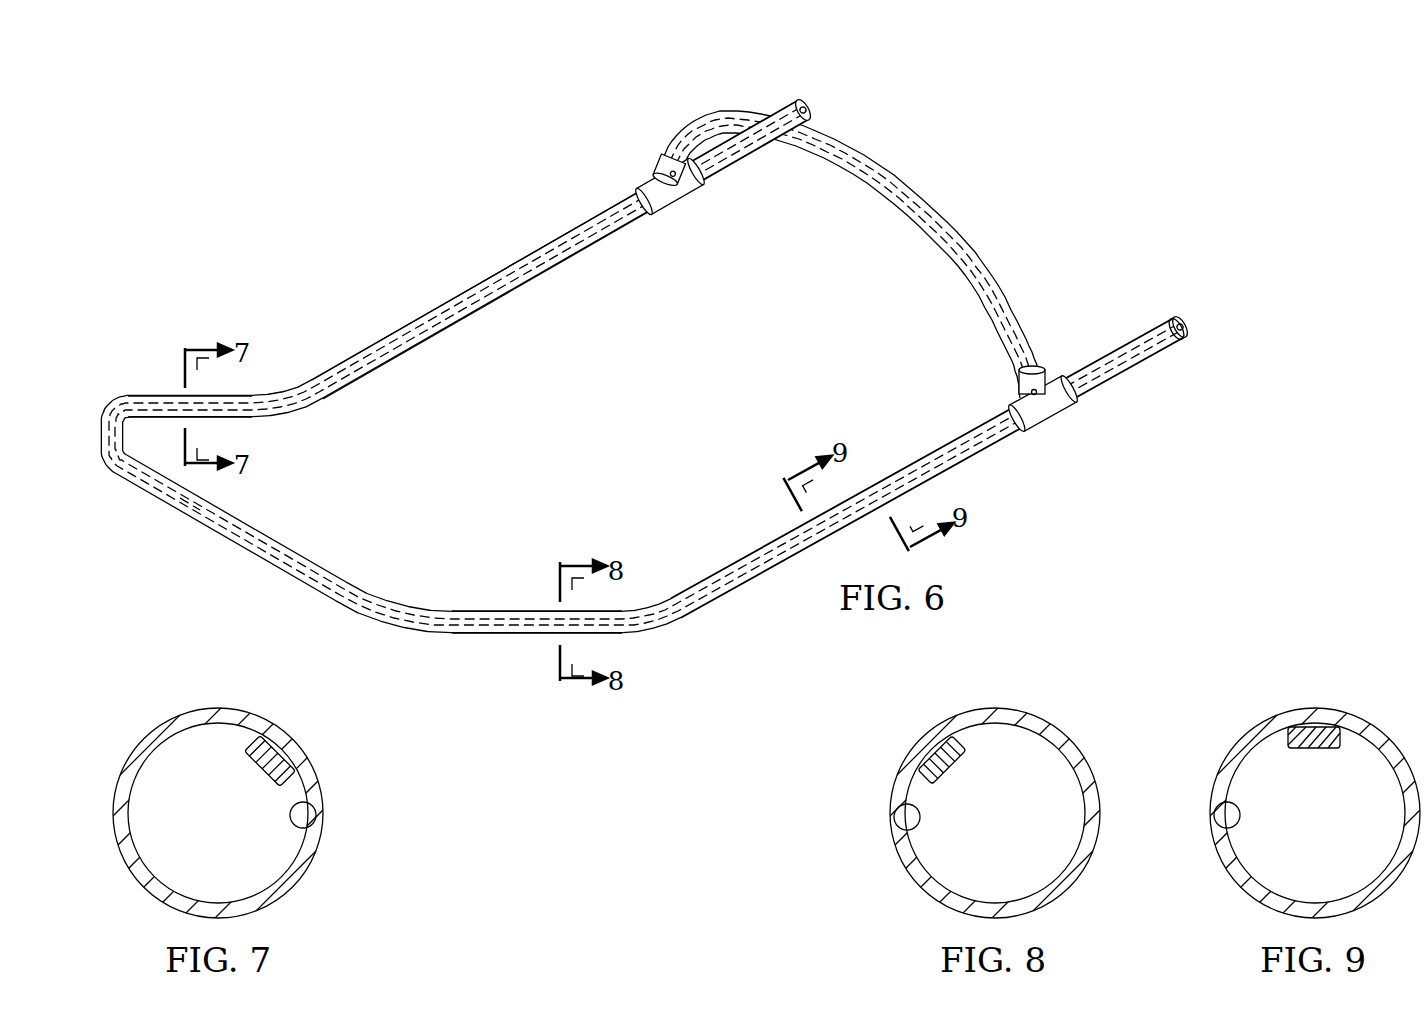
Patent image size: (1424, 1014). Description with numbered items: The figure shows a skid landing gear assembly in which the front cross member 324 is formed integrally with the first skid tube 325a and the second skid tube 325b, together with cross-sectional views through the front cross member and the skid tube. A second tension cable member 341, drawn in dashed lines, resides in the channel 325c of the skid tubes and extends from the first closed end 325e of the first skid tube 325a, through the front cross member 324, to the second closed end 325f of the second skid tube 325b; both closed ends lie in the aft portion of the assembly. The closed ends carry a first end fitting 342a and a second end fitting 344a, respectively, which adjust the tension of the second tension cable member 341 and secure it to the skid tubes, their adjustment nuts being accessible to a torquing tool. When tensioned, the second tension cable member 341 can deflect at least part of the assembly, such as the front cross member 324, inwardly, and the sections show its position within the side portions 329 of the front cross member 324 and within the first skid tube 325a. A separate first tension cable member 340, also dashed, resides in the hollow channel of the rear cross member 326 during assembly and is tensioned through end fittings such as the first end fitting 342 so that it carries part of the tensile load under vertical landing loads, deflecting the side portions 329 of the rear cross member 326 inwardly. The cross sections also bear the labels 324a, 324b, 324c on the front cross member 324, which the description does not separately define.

In FIG. 6, the front cross member 324 is at (246, 548).
In FIG. 7, the outer tube wall 324a is at (228, 920).
In FIG. 8, the outer tube wall 324a is at (1000, 918).
In FIG. 7, the outer tube layer 324b is at (219, 706).
In FIG. 8, the outer tube layer 324b is at (991, 707).
In FIG. 7, the outer tube channel 324c is at (322, 816).
In FIG. 8, the outer tube channel 324c is at (894, 816).
In FIG. 6, the first skid tube 325a is at (980, 456).
In FIG. 9, the first skid tube 325a is at (1313, 705).
In FIG. 6, the second skid tube 325b is at (470, 283).
In FIG. 6, the channel 325c is at (470, 320).
In FIG. 9, the channel 325c is at (1217, 820).
In FIG. 6, the first closed end 325e is at (1182, 316).
In FIG. 6, the second closed end 325f is at (812, 108).
In FIG. 6, the rear cross member 326 is at (881, 168).
In FIG. 6, the side portions 329 is at (150, 394).
In FIG. 6, the first tension cable member 340 is at (937, 212).
In FIG. 6, the second tension cable member 341 is at (190, 510).
In FIG. 7, the second tension cable member 341 is at (262, 770).
In FIG. 8, the second tension cable member 341 is at (957, 770).
In FIG. 9, the second tension cable member 341 is at (1312, 751).
In FIG. 6, the first end fitting 342 is at (647, 180).
In FIG. 6, the first end fitting 342a is at (1183, 336).
In FIG. 6, the second end fitting 344a is at (788, 100).